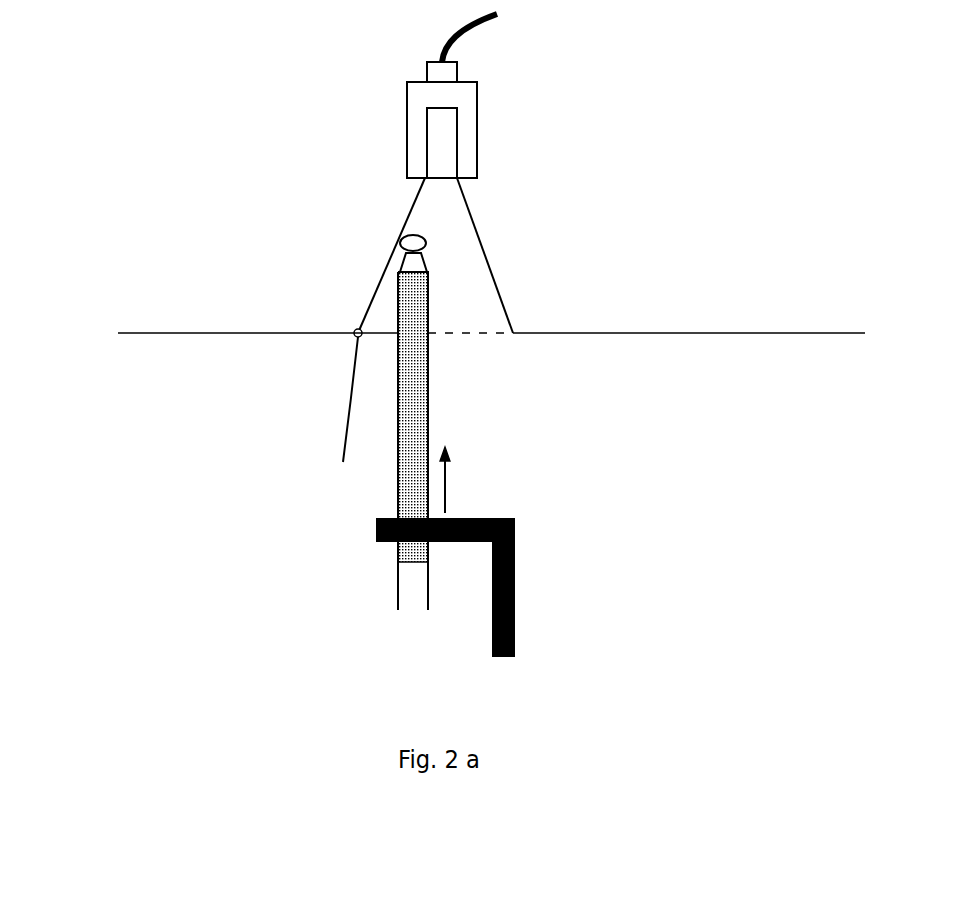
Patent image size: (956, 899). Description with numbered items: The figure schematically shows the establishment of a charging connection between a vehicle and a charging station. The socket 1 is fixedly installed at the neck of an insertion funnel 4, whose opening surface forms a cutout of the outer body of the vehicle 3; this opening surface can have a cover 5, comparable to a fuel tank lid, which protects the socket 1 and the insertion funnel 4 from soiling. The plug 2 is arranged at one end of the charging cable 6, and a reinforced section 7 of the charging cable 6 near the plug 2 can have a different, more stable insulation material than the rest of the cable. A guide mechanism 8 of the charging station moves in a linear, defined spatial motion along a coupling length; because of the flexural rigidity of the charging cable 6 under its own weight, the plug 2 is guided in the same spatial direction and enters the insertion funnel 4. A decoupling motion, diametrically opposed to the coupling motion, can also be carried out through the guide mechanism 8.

The socket 1 is at (407, 108).
The plug 2 is at (395, 259).
The outer body of the vehicle 3 is at (140, 333).
The insertion funnel 4 is at (367, 307).
The cover 5 is at (347, 415).
The charging cable 6 is at (398, 592).
The reinforced section 7 is at (398, 497).
The guide mechanism 8 is at (515, 530).